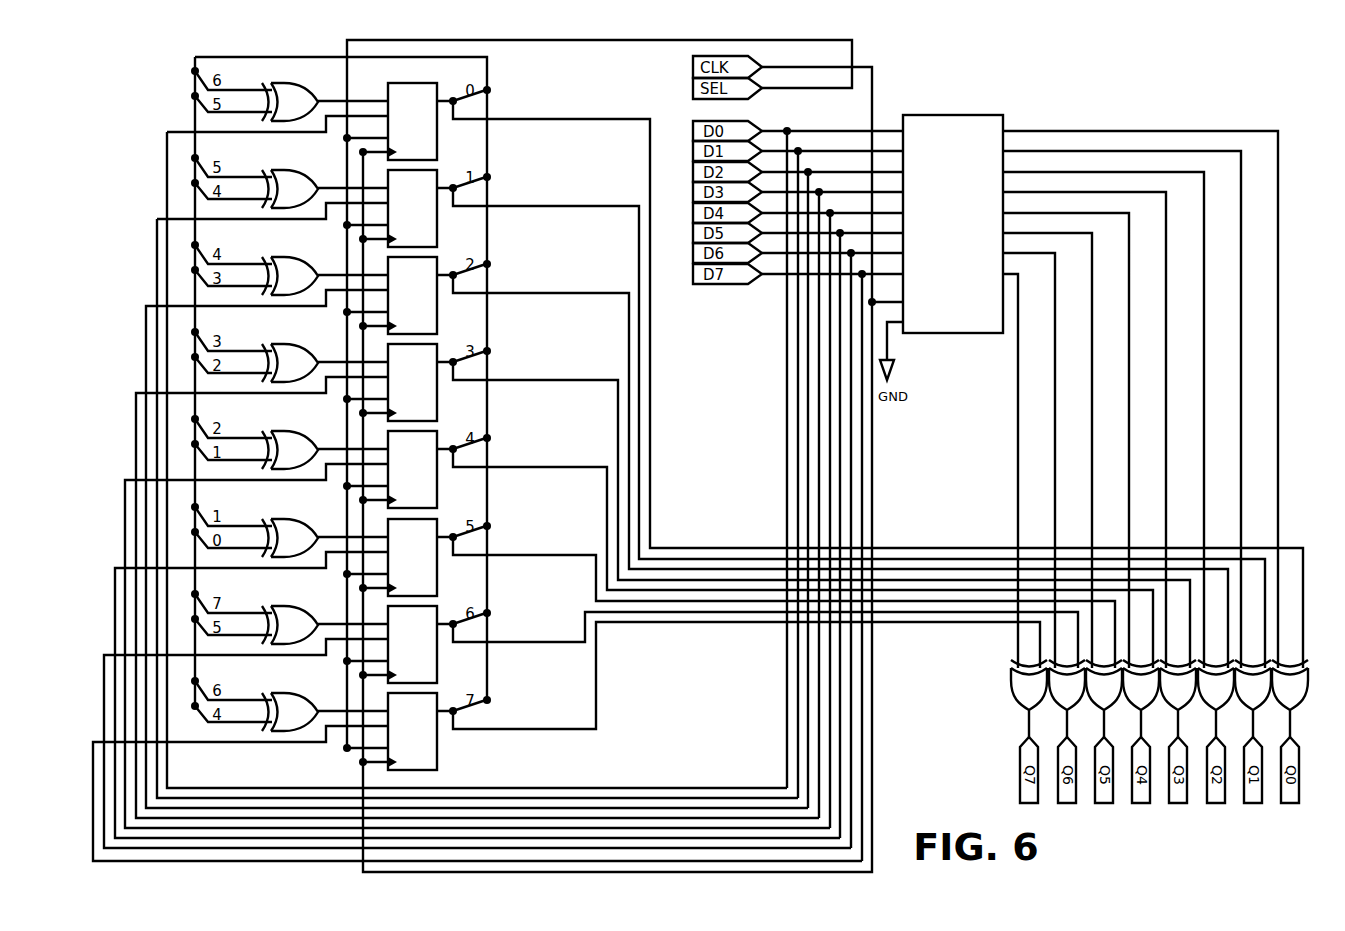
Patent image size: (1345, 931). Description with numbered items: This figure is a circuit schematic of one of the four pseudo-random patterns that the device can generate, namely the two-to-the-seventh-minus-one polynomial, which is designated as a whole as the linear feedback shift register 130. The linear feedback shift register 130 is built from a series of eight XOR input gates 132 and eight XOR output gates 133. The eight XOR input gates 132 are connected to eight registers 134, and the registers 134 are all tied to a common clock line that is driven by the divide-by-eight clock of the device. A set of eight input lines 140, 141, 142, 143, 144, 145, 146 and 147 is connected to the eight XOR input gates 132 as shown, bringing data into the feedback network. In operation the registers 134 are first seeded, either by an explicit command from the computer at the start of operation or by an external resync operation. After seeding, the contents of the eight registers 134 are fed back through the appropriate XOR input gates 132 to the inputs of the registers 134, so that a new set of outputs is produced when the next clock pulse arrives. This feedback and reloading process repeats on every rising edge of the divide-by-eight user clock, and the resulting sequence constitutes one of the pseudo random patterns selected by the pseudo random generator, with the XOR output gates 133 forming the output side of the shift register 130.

The linear feedback shift register 130 is at (938, 88).
The XOR input gates 132 is at (302, 106).
The XOR output gates 133 is at (1022, 686).
The registers 134 is at (433, 92).
The input line 140 is at (862, 450).
The input line 141 is at (851, 393).
The input line 142 is at (840, 500).
The input line 143 is at (830, 463).
The input line 144 is at (819, 317).
The input line 145 is at (808, 368).
The input line 146 is at (742, 798).
The input line 147 is at (548, 788).